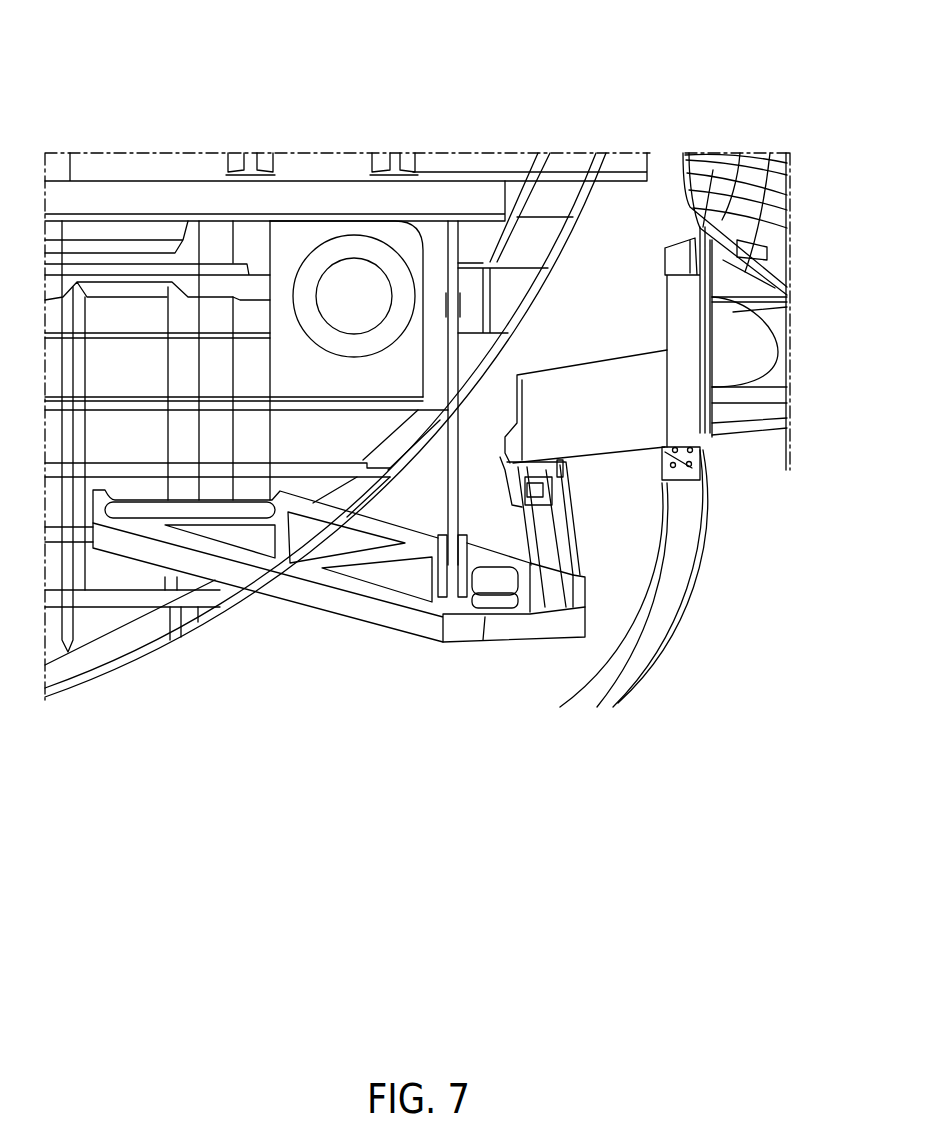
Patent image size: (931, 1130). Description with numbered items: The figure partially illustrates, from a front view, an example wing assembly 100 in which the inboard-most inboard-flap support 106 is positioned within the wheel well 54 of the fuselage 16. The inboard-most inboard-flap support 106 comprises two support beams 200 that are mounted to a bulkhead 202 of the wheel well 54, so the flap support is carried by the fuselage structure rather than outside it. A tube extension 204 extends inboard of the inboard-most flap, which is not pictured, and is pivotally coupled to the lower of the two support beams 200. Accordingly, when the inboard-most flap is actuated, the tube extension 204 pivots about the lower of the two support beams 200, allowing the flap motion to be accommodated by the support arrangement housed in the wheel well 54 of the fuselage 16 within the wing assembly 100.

The wing assembly 100 is at (751, 50).
The fuselage 16 is at (503, 88).
The wheel well 54 is at (575, 153).
The bulkhead 202 is at (535, 300).
The tube extension 204 is at (612, 452).
The support beams 200 is at (445, 477).
The inboard-most inboard-flap support 106 is at (440, 685).